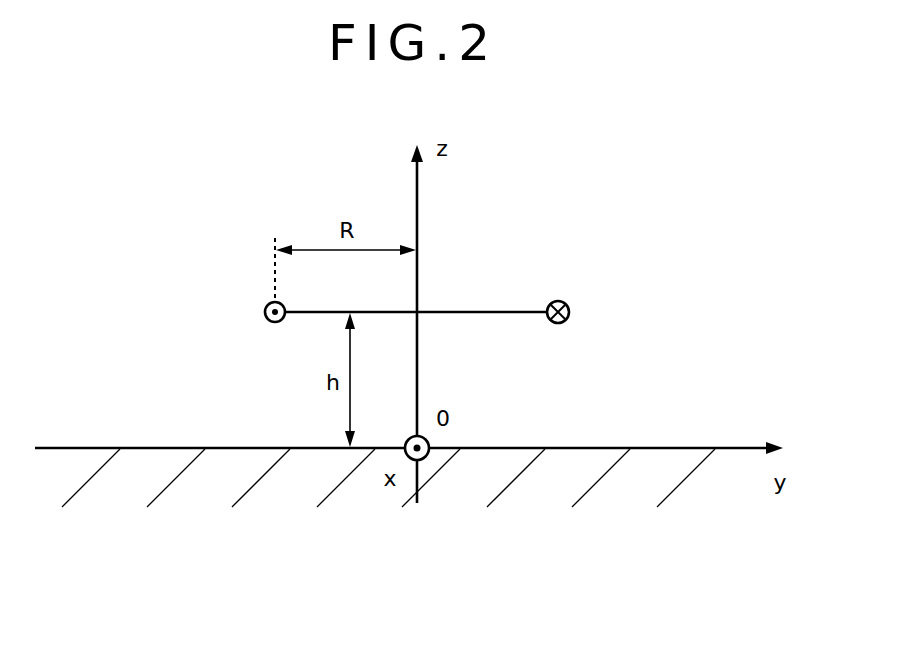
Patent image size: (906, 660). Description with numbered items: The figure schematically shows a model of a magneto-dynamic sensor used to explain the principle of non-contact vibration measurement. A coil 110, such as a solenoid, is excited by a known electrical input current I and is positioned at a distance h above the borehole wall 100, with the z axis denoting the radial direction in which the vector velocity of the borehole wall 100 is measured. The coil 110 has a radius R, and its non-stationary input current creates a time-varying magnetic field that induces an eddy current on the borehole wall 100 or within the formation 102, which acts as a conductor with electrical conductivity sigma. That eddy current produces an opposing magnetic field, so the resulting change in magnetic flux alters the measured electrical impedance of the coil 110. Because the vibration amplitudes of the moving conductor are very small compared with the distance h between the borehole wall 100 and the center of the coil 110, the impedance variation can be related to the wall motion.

The borehole wall 100 is at (687, 444).
The formation 102 is at (527, 490).
The coil 110 is at (266, 306).